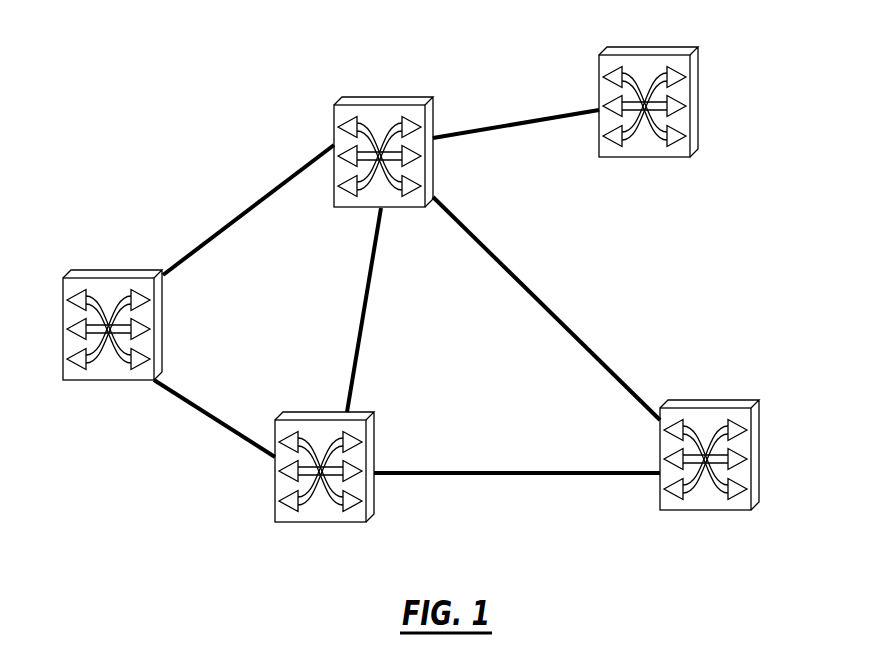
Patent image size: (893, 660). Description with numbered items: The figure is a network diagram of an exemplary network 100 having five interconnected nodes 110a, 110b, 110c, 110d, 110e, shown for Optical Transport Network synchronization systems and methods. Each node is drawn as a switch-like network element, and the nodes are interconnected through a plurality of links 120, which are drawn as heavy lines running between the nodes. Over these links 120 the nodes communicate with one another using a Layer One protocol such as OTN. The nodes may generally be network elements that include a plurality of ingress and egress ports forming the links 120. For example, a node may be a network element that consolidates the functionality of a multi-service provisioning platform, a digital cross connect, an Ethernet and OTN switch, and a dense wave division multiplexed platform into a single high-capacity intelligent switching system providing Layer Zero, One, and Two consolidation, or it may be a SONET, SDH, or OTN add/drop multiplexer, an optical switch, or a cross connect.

The network 100 is at (243, 42).
The node 110a is at (104, 270).
The node 110b is at (385, 96).
The node 110c is at (658, 46).
The node 110d is at (708, 400).
The node 110e is at (275, 492).
The links 120 is at (237, 226).